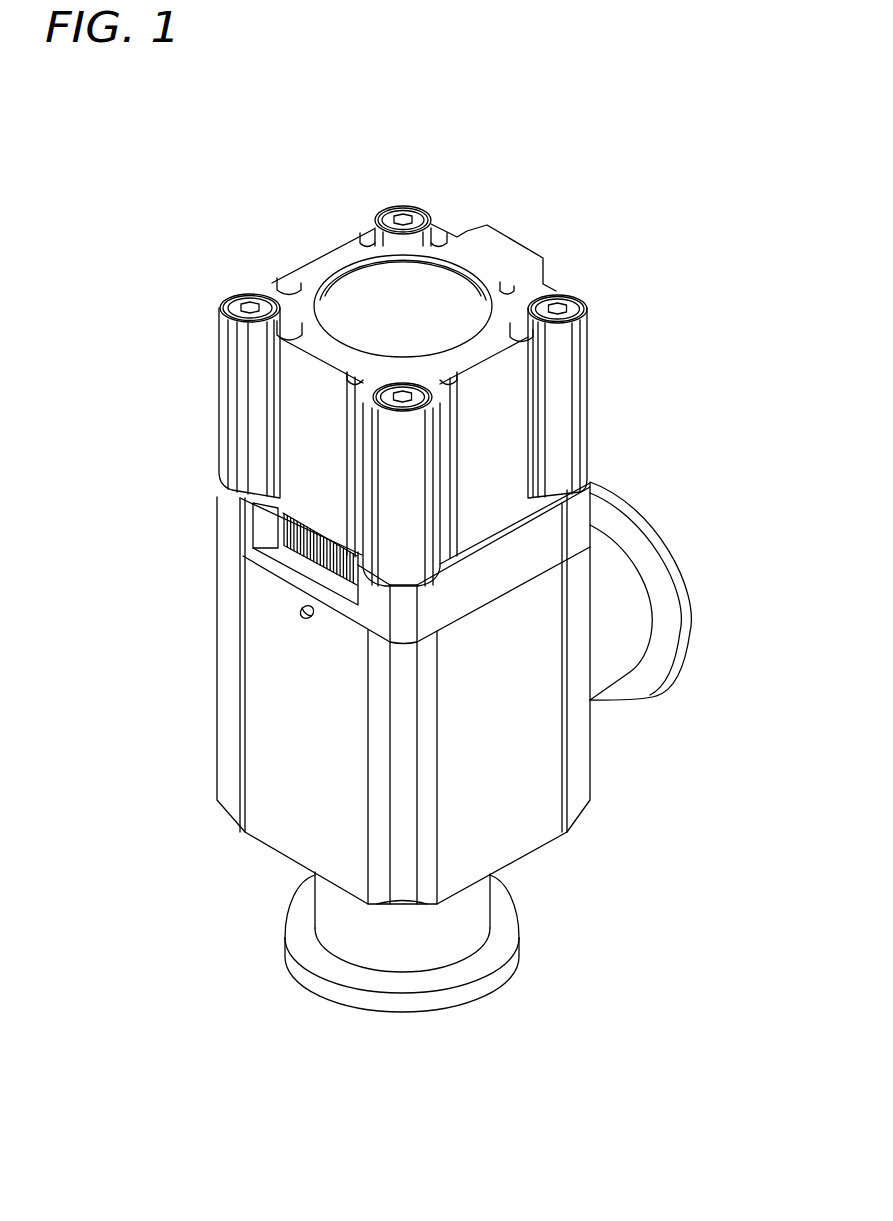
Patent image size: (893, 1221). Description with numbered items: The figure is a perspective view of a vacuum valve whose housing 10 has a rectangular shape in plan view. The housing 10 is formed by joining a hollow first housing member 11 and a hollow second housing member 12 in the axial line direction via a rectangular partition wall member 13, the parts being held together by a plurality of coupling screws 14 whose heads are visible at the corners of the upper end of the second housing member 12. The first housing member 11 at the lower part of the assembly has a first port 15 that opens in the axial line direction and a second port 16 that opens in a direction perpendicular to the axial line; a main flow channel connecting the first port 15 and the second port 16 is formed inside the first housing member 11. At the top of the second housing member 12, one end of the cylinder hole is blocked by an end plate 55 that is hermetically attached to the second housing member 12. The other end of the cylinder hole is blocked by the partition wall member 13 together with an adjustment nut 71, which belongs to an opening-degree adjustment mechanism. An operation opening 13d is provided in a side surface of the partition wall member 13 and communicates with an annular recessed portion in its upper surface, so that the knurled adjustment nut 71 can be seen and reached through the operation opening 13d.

The housing 10 is at (183, 274).
The first housing member 11 is at (275, 715).
The second housing member 12 is at (305, 403).
The partition wall member 13 is at (230, 505).
The operation opening 13d is at (282, 548).
The coupling screws 14 is at (251, 305).
The first port 15 is at (413, 1002).
The second port 16 is at (673, 582).
The end plate 55 is at (352, 296).
The adjustment nut 71 is at (316, 552).